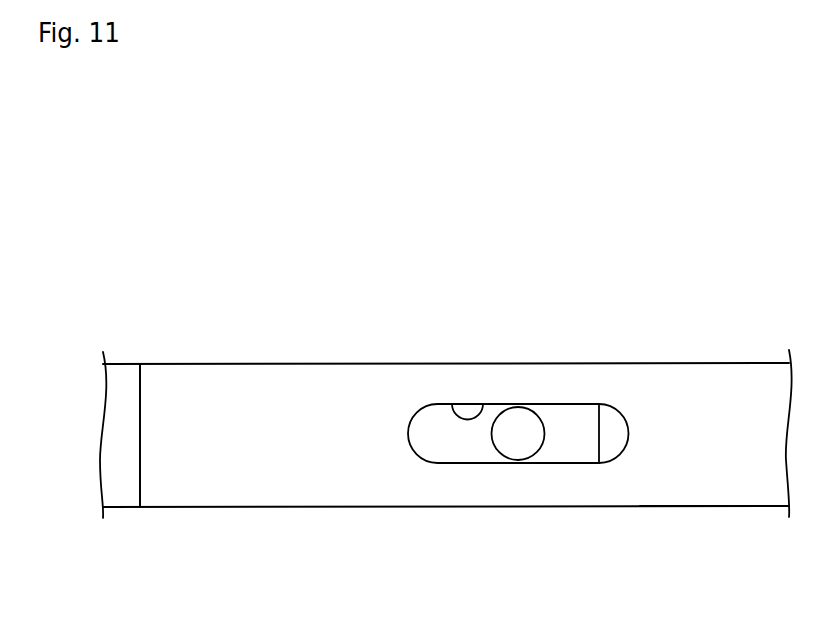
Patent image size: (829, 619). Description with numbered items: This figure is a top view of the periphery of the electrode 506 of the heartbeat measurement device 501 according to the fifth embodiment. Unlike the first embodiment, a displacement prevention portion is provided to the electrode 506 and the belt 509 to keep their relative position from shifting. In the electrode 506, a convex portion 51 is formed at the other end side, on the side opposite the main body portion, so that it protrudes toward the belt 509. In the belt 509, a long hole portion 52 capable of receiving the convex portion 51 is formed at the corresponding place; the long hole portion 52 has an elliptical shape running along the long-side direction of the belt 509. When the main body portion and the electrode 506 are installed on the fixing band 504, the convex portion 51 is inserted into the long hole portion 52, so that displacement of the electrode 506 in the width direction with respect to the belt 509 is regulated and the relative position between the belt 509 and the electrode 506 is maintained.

The heartbeat measurement device 501 is at (446, 370).
The fixing band 504 is at (233, 349).
The electrode 506 is at (212, 472).
The belt 509 is at (723, 457).
The long hole portion 52 is at (453, 404).
The convex portion 51 is at (518, 450).